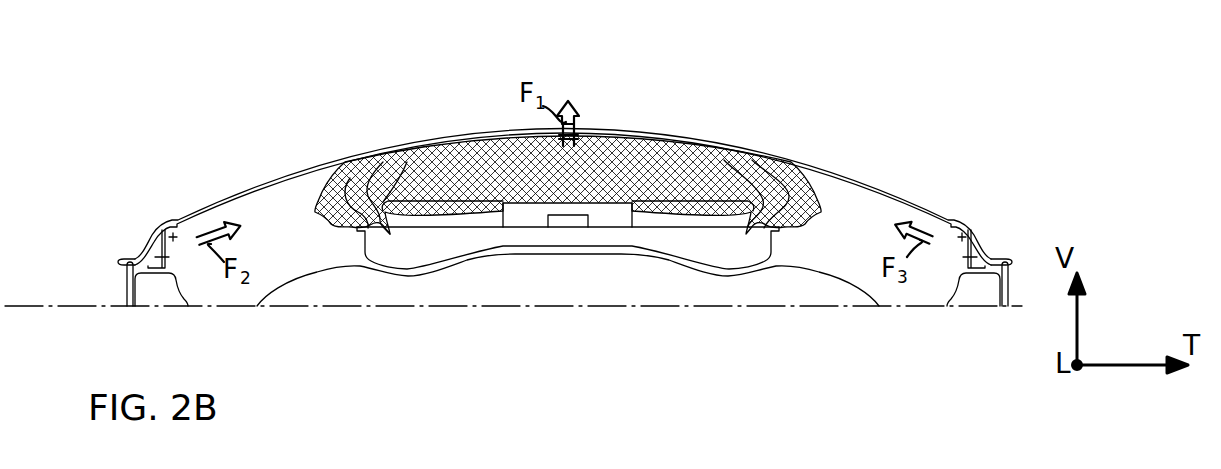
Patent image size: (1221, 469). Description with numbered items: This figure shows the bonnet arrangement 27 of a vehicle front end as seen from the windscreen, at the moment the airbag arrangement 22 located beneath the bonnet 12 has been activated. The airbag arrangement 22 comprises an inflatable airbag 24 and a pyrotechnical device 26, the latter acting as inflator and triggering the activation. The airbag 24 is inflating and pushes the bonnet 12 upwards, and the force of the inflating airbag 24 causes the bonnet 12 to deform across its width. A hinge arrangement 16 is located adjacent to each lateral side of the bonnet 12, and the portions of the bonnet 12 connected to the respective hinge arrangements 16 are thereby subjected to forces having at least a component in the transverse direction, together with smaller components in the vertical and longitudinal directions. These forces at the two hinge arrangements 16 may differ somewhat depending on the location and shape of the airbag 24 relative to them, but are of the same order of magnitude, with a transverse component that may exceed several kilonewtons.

The bonnet 12 is at (342, 159).
The hinge arrangement 16 is at (967, 258).
The airbag arrangement 22 is at (535, 258).
The airbag 24 is at (662, 160).
The pyrotechnical device 26 is at (579, 222).
The bonnet arrangement 27 is at (465, 78).